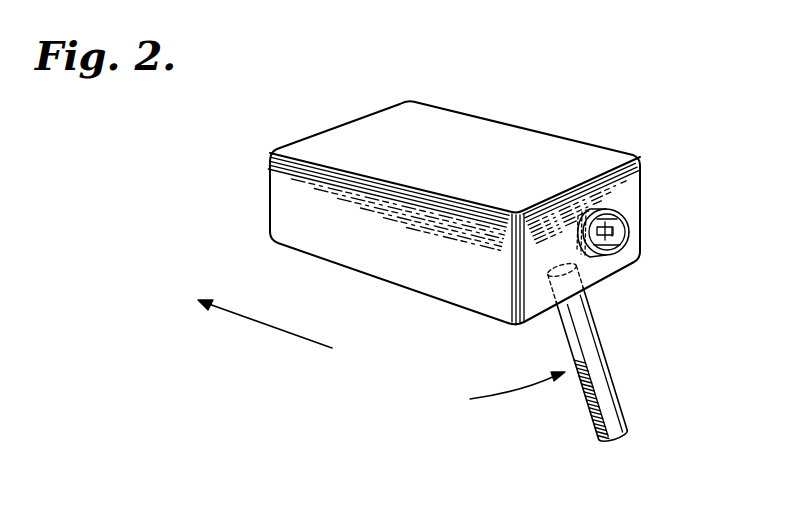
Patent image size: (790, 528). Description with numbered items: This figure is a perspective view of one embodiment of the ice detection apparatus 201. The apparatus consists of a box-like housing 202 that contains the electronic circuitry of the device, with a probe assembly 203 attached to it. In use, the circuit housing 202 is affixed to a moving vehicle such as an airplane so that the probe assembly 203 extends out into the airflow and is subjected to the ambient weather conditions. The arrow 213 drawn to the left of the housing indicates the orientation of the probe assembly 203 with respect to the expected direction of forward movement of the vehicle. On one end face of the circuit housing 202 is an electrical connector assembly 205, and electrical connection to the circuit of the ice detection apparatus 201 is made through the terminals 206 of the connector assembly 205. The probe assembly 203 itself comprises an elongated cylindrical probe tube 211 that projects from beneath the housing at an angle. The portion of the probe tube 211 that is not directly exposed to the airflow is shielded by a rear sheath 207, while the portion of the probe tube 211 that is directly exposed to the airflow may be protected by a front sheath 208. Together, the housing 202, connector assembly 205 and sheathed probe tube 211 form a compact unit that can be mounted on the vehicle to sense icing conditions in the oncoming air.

The ice detection apparatus 201 is at (578, 108).
The housing 202 is at (402, 277).
The probe assembly 203 is at (496, 392).
The electrical connector assembly 205 is at (613, 208).
The terminals 206 is at (617, 236).
The rear sheath 207 is at (590, 340).
The front sheath 208 is at (563, 330).
The probe tube 211 is at (590, 407).
The arrow 213 is at (263, 323).